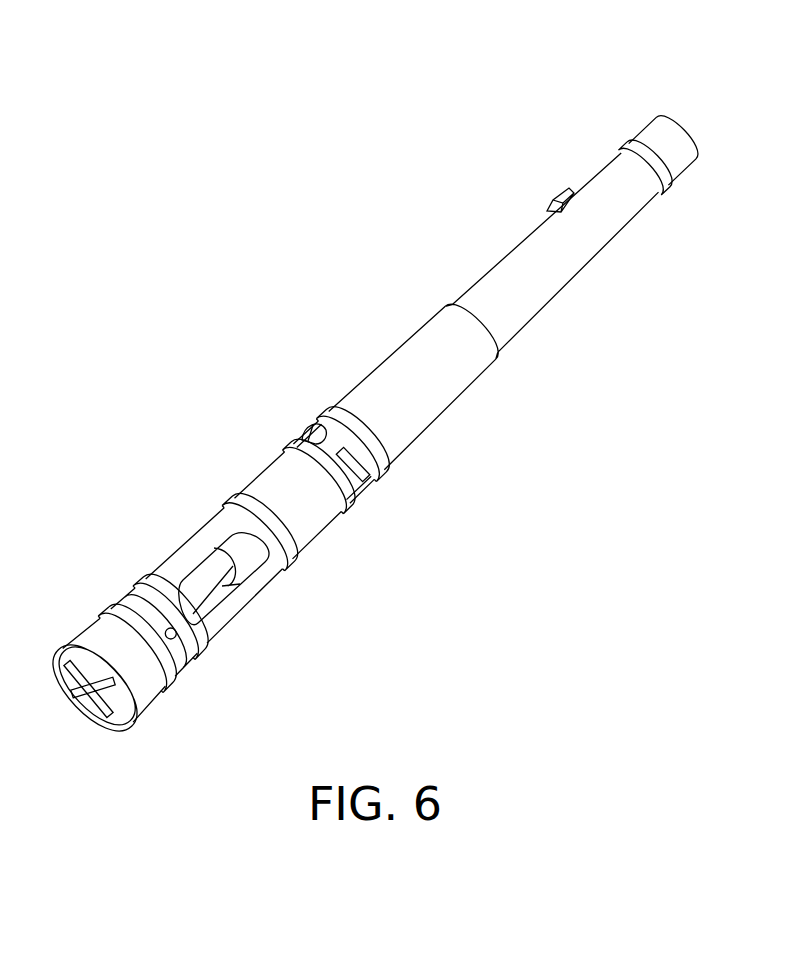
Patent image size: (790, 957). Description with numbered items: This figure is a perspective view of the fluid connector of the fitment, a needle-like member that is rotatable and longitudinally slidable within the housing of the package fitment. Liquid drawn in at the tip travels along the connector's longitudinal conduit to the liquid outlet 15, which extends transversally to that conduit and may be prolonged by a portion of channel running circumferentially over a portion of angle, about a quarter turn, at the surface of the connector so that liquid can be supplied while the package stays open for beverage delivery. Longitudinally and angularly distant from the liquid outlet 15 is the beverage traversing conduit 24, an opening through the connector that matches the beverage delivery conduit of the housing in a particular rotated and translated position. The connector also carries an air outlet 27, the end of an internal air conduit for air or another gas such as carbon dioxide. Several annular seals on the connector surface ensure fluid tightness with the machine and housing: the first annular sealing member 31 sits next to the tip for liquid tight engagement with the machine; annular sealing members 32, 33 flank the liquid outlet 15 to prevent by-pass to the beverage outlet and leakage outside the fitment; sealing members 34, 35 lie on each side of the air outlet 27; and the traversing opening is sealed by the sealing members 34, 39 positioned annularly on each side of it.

The first annular sealing member 31 is at (620, 142).
The annular sealing member 32 is at (320, 418).
The liquid outlet 15 is at (308, 430).
The annular sealing member 33 is at (284, 445).
The sealing member 39 is at (293, 562).
The beverage traversing conduit 24 is at (244, 599).
The air outlet 27 is at (177, 640).
The sealing member 34 is at (133, 588).
The sealing member 35 is at (108, 606).